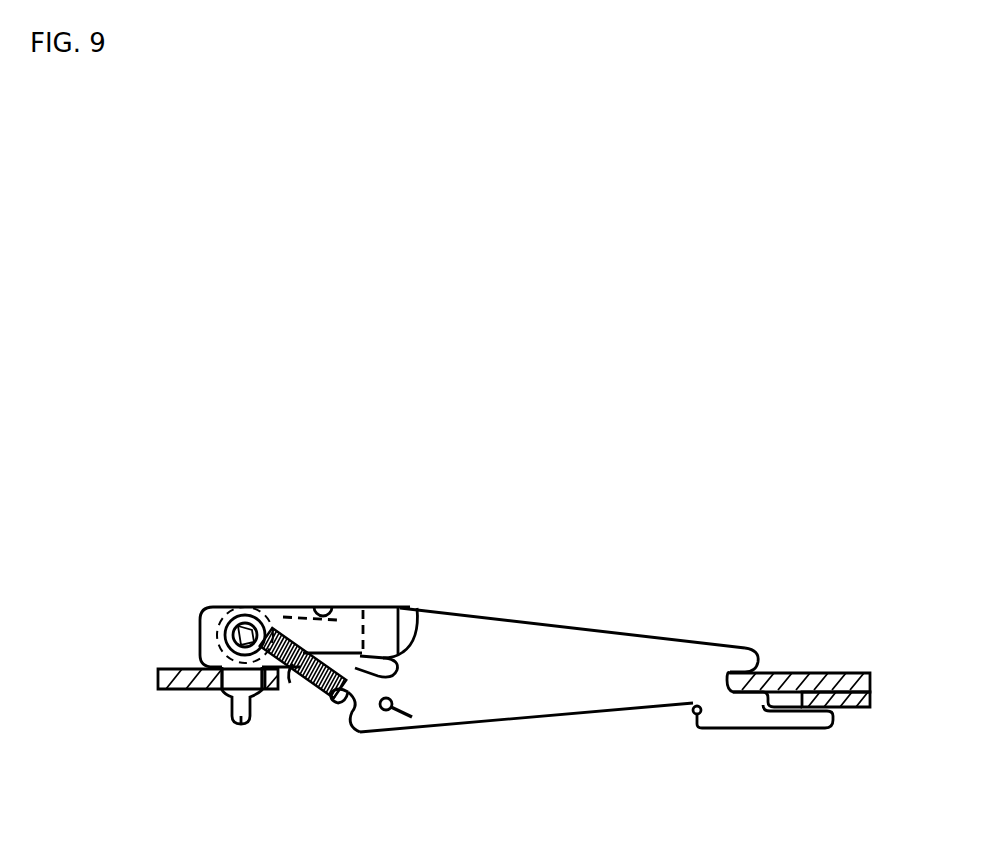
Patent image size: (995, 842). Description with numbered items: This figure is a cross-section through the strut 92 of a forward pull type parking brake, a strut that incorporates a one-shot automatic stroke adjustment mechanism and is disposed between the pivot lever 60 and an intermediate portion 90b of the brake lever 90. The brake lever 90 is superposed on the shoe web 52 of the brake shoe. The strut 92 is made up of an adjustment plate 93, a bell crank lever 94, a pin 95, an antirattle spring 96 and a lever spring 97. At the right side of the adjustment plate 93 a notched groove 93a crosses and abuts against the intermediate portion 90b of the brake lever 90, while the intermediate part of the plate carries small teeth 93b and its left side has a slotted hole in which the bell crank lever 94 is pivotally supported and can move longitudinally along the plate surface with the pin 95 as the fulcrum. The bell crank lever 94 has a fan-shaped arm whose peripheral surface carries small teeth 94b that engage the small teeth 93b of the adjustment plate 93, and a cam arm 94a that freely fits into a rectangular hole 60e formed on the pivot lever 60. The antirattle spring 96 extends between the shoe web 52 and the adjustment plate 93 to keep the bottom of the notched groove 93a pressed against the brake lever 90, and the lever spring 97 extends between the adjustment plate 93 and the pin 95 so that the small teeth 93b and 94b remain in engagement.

The shoe web 52 is at (854, 700).
The pivot lever 60 is at (180, 669).
The rectangular hole 60e is at (232, 693).
The brake lever 90 is at (822, 672).
The intermediate portion 90b is at (747, 684).
The strut 92 is at (523, 625).
The adjustment plate 93 is at (616, 650).
The notched groove 93a is at (764, 662).
The small teeth 93b is at (333, 703).
The bell crank lever 94 is at (345, 607).
The cam arm 94a is at (238, 724).
The small teeth 94b is at (415, 625).
The pin 95 is at (236, 607).
The antirattle spring 96 is at (697, 714).
The lever spring 97 is at (297, 685).